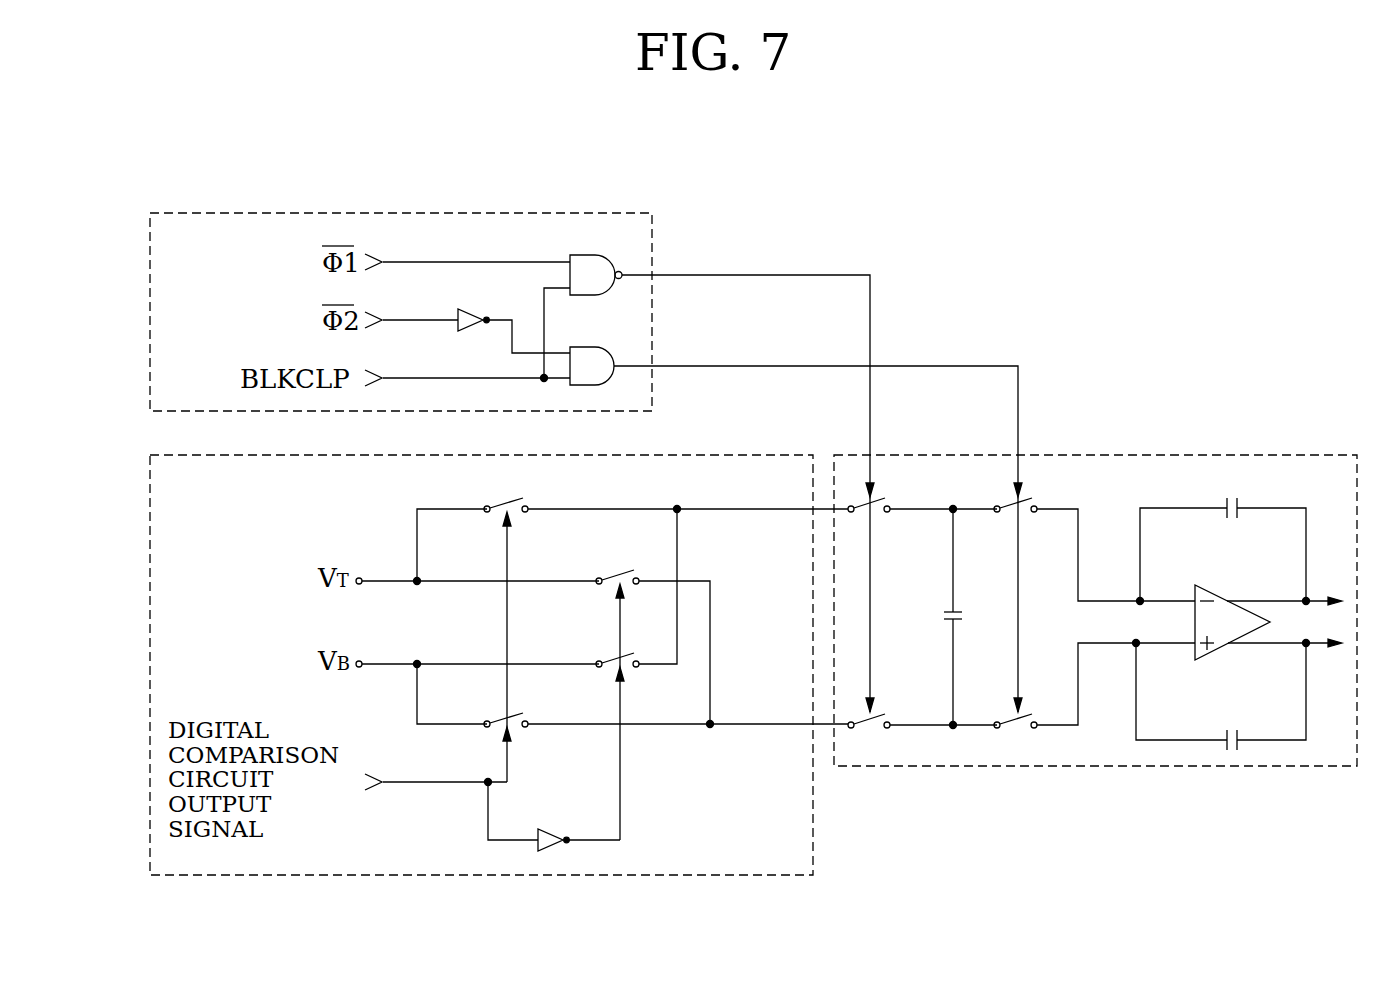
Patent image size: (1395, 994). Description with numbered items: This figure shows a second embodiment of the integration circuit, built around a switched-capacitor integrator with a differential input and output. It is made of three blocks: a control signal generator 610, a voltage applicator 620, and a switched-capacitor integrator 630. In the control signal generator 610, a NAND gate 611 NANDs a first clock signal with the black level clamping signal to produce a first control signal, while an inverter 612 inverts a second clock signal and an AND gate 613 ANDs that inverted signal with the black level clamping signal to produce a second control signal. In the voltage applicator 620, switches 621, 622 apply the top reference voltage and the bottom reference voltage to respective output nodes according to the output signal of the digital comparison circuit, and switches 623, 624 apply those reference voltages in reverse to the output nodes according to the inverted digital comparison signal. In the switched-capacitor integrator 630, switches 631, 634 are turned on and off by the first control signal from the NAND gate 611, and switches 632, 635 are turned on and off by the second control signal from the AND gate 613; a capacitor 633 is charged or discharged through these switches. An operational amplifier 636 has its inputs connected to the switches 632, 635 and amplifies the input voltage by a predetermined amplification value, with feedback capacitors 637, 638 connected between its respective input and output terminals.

The control signal generator 610 is at (441, 213).
The NAND gate 611 is at (589, 259).
The inverter 612 is at (514, 318).
The AND gate 613 is at (591, 349).
The voltage applicator 620 is at (813, 836).
The switch 621 is at (496, 490).
The switch 622 is at (484, 707).
The switch 623 is at (603, 563).
The switch 624 is at (593, 647).
The switched-capacitor integrator 630 is at (1127, 766).
The switch 631 is at (894, 490).
The switch 632 is at (1040, 489).
The capacitor 633 is at (922, 617).
The switch 634 is at (877, 738).
The switch 635 is at (1024, 738).
The operational amplifier 636 is at (1232, 609).
The feedback capacitor 637 is at (1223, 532).
The feedback capacitor 638 is at (1221, 696).